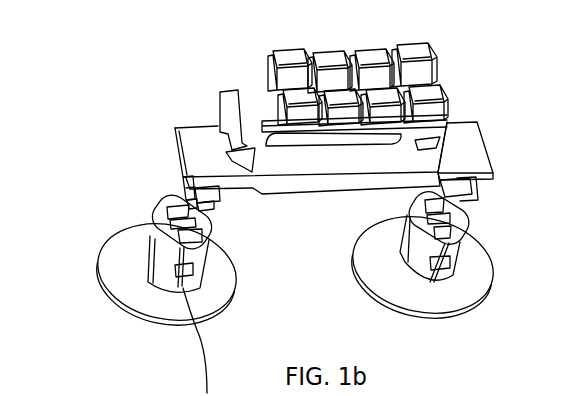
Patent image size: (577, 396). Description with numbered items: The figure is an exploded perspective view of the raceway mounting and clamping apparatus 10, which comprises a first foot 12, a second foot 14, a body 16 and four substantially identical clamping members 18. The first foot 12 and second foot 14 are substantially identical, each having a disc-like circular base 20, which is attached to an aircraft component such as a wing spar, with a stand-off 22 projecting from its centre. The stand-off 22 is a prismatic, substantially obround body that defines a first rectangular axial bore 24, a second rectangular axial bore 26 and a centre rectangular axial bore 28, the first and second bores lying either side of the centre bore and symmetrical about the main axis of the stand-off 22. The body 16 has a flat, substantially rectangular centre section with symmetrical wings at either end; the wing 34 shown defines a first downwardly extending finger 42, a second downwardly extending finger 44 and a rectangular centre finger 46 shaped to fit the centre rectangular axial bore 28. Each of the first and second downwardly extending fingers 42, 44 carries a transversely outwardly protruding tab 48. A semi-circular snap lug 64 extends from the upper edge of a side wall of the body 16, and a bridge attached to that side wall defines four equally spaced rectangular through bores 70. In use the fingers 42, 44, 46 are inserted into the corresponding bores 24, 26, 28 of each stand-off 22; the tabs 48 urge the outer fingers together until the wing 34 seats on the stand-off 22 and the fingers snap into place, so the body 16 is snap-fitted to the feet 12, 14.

The raceway mounting and clamping apparatus 10 is at (100, 106).
The first foot 12 is at (100, 285).
The second foot 14 is at (492, 283).
The body 16 is at (485, 138).
The clamping members 18 is at (270, 53).
The circular base 20 is at (162, 307).
The stand-off 22 is at (163, 228).
The first rectangular axial bore 24 is at (174, 200).
The second rectangular axial bore 26 is at (190, 243).
The centre rectangular axial bore 28 is at (177, 222).
The wing 34 is at (198, 131).
The first downwardly extending finger 42 is at (172, 171).
The second downwardly extending finger 44 is at (217, 188).
The centre finger 46 is at (176, 182).
The tab 48 is at (215, 202).
The semi-circular snap lug 64 is at (432, 138).
The rectangular through bores 70 is at (270, 100).